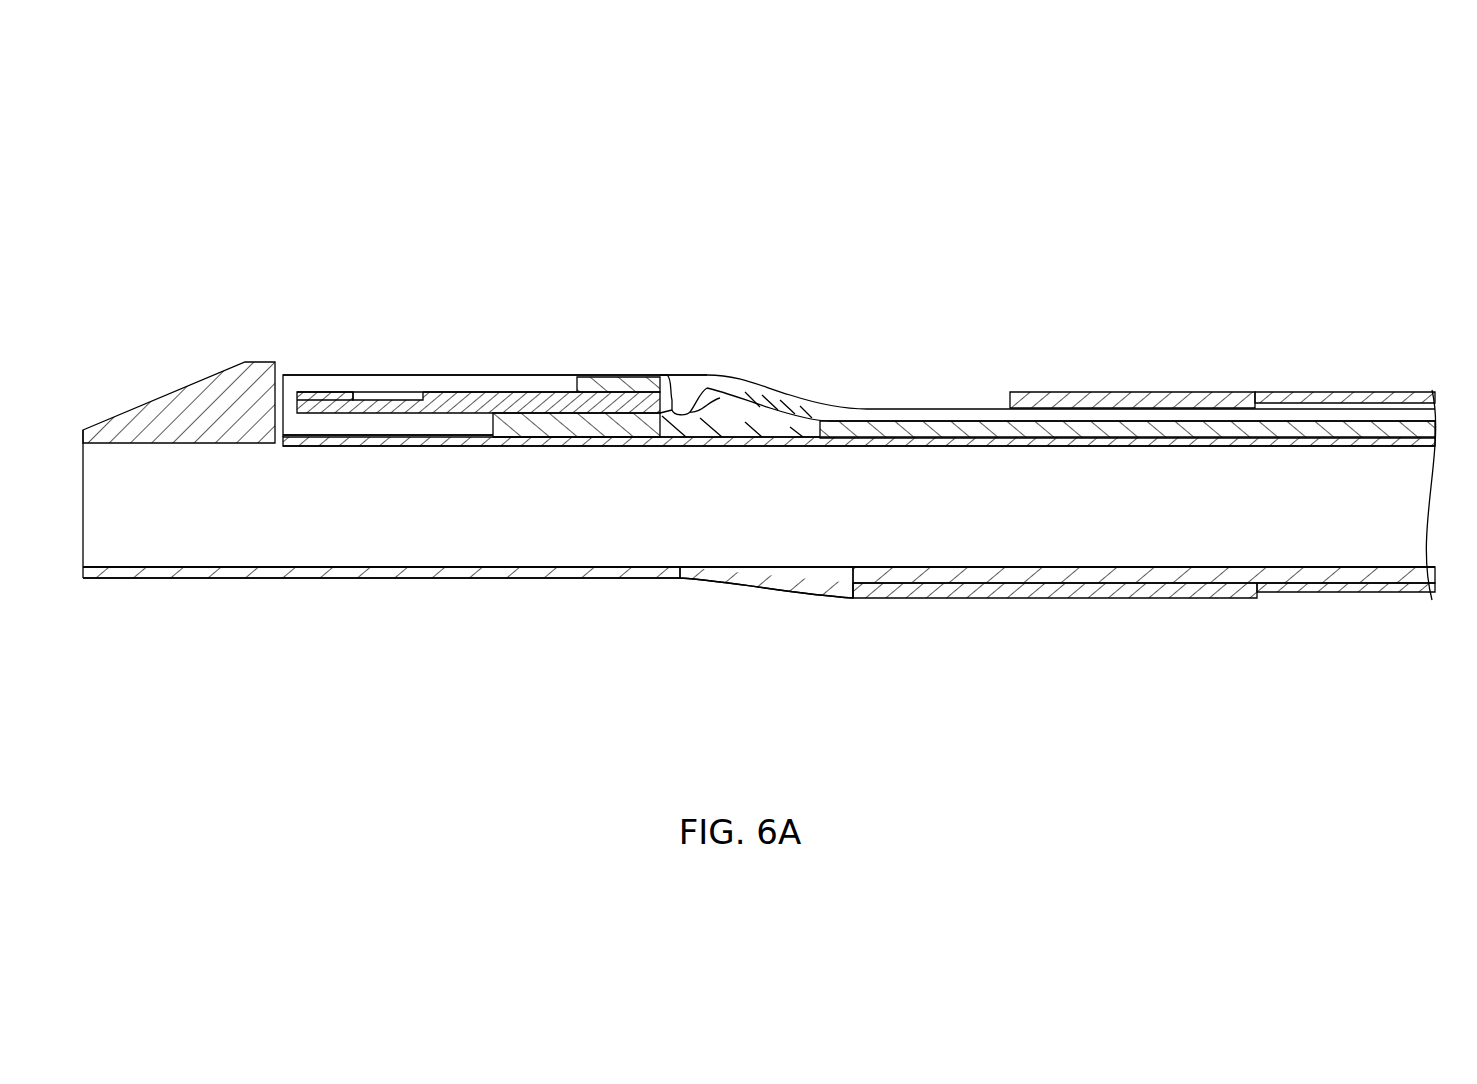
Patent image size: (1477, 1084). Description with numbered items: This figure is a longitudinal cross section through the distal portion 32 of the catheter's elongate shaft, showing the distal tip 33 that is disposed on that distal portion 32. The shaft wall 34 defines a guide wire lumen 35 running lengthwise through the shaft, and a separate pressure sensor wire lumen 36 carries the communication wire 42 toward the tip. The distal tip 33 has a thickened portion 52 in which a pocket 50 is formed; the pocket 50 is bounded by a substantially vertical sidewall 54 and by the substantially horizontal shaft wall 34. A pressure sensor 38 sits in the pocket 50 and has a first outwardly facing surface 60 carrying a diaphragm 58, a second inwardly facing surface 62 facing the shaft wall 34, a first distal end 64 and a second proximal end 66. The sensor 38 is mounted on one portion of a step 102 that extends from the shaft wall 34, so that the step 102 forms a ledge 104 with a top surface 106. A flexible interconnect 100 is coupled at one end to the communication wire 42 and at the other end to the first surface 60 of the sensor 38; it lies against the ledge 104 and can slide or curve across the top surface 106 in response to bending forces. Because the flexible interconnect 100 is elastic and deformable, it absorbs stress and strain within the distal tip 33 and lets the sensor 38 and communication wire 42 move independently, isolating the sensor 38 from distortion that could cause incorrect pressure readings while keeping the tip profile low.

The distal portion 32 is at (1013, 725).
The distal tip 33 is at (376, 180).
The shaft wall 34 is at (395, 440).
The guide wire lumen 35 is at (918, 519).
The pressure sensor wire lumen 36 is at (1408, 398).
The pressure sensor 38 is at (495, 389).
The communication wire 42 is at (865, 410).
The pocket 50 is at (478, 374).
The thickened portion 52 is at (685, 366).
The sidewall 54 is at (280, 372).
The diaphragm 58 is at (388, 392).
The first outwardly facing surface 60 is at (520, 390).
The second inwardly facing surface 62 is at (322, 440).
The first distal end 64 is at (600, 440).
The second proximal end 66 is at (328, 388).
The flexible interconnect 100 is at (765, 385).
The step 102 is at (558, 442).
The ledge 104 is at (687, 443).
The top surface 106 is at (688, 410).